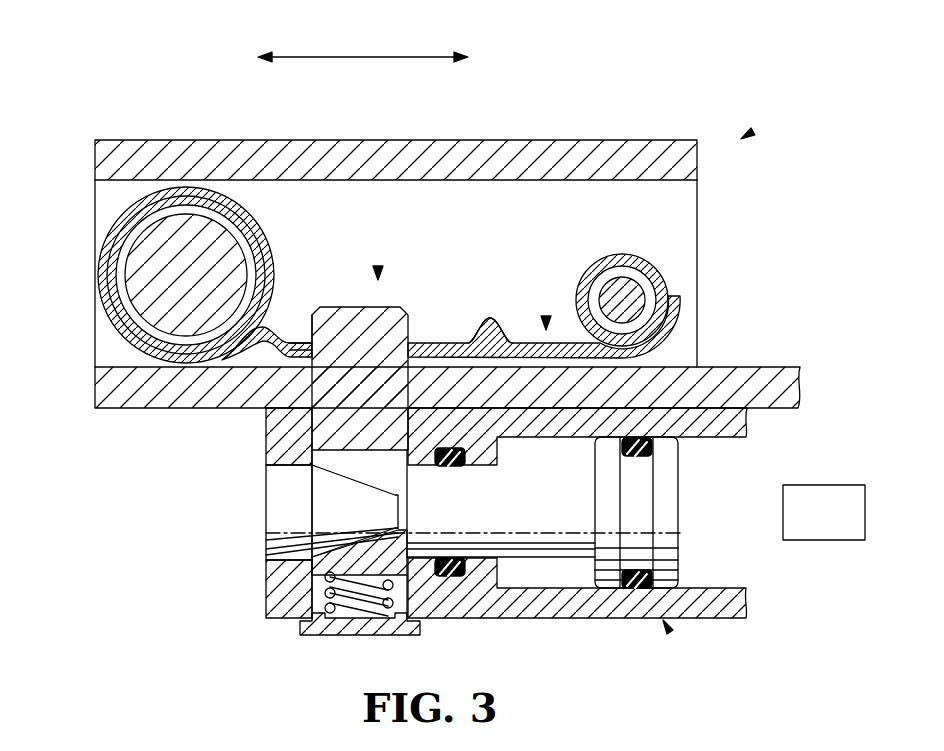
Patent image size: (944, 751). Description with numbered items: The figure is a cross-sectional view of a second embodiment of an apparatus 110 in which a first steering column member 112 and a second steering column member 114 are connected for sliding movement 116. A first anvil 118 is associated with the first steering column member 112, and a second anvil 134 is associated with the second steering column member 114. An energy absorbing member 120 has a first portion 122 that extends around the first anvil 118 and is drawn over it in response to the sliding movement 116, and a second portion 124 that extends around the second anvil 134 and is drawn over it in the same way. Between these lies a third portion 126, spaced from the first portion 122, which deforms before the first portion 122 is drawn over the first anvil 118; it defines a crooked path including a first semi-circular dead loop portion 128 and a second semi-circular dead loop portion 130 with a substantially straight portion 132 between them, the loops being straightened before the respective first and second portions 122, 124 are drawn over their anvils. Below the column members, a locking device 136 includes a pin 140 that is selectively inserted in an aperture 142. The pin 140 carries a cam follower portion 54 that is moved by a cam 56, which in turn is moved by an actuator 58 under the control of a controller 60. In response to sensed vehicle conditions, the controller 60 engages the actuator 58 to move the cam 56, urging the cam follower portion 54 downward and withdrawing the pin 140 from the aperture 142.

The apparatus 110 is at (442, 342).
The first steering column member 112 is at (172, 147).
The second steering column member 114 is at (768, 400).
The sliding movement 116 is at (312, 57).
The first anvil 118 is at (138, 285).
The energy absorbing member 120 is at (546, 322).
The first portion 122 is at (120, 225).
The second portion 124 is at (663, 312).
The third portion 126 is at (378, 272).
The first semi-circular dead loop portion 128 is at (306, 330).
The second semi-circular dead loop portion 130 is at (490, 318).
The diaphragm web 132 is at (452, 342).
The second anvil 134 is at (625, 290).
The locking device 136 is at (666, 626).
The pin 140 is at (292, 345).
The aperture 142 is at (267, 463).
The cam follower portion 54 is at (372, 535).
The cam 56 is at (343, 513).
The actuator 58 is at (680, 548).
The controller 60 is at (680, 513).